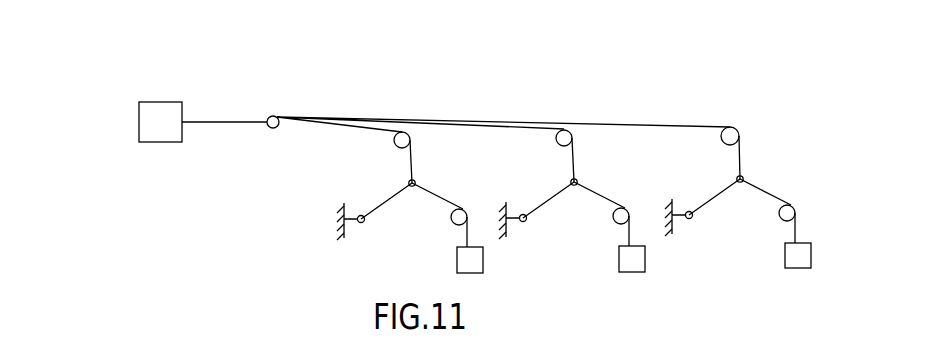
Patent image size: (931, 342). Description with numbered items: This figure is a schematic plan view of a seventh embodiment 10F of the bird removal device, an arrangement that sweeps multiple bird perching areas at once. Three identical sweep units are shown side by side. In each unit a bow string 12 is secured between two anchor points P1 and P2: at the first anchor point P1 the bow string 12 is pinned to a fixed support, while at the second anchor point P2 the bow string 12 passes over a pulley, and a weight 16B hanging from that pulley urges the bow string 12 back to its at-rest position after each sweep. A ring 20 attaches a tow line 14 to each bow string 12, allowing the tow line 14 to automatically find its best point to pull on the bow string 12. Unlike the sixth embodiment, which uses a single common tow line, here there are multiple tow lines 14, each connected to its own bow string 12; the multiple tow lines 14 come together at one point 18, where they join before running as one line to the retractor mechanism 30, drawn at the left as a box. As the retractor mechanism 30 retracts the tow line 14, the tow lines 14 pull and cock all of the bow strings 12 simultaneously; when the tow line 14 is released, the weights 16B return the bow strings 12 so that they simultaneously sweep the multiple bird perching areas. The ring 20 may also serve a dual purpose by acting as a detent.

The seventh embodiment 10F is at (777, 70).
The retractor mechanism 30 is at (160, 108).
The point 18 is at (275, 117).
The tow line 14 is at (413, 153).
The bow string 12 is at (385, 203).
The ring 20 is at (416, 182).
The anchor point P1 is at (364, 223).
The anchor point P2 is at (465, 209).
The weight 16B is at (484, 263).